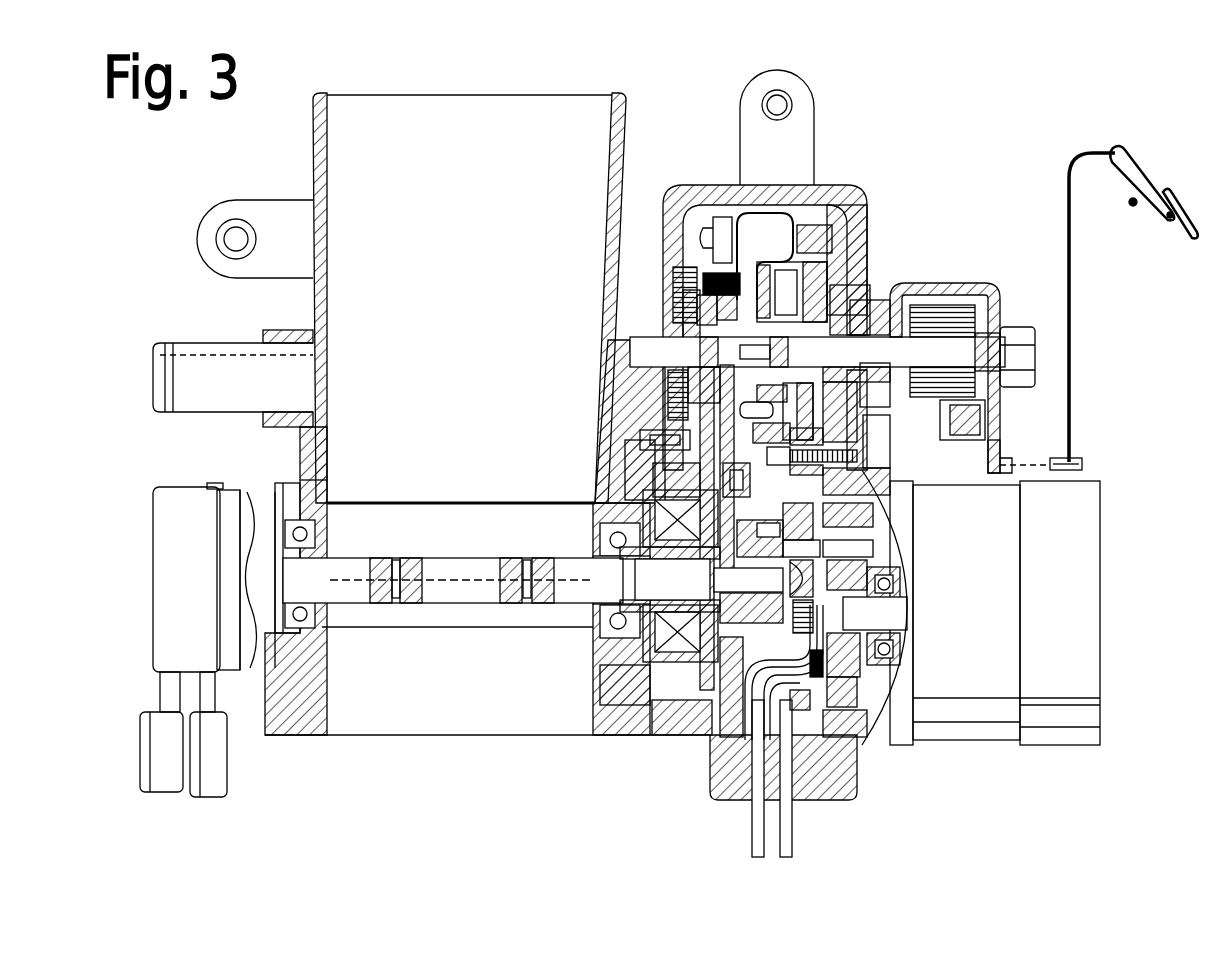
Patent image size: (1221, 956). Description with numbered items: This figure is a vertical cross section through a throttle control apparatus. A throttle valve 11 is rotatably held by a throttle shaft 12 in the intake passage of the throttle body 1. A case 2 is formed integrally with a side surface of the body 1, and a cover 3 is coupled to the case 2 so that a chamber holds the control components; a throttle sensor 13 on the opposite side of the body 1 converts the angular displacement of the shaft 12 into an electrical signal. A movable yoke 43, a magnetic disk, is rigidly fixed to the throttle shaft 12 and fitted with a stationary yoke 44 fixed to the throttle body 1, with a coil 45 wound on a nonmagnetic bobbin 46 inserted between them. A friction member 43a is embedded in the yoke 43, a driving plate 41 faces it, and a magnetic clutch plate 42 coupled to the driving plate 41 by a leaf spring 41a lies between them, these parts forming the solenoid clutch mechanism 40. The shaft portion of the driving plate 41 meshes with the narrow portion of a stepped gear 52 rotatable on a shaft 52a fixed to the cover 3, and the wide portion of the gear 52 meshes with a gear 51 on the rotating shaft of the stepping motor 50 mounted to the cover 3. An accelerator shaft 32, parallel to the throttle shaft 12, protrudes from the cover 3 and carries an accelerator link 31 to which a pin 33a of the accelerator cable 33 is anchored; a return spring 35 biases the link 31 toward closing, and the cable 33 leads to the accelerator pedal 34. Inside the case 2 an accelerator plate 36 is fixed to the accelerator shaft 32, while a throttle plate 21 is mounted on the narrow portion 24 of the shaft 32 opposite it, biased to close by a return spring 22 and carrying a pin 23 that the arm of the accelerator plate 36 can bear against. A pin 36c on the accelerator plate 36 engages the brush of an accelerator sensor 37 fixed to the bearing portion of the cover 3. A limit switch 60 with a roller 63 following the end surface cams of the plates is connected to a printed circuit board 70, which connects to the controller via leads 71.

The throttle body 1 is at (313, 170).
The case 2 is at (790, 275).
The cover 3 is at (850, 197).
The throttle valve 11 is at (467, 578).
The throttle shaft 12 is at (570, 598).
The throttle sensor 13 is at (193, 497).
The throttle plate 21 is at (718, 280).
The return spring 22 is at (668, 310).
The pin 23 is at (640, 440).
The narrow portion 24 is at (643, 337).
The accelerator link 31 is at (1000, 410).
The accelerator shaft 32 is at (953, 353).
The accelerator cable 33 is at (1072, 322).
The pin 33a is at (1073, 460).
The accelerator pedal 34 is at (1140, 213).
The return spring 35 is at (930, 303).
The accelerator plate 36 is at (800, 262).
The pin 36c is at (665, 400).
The accelerator sensor 37 is at (863, 278).
The solenoid clutch mechanism 40 is at (666, 708).
The driving plate 41 is at (790, 805).
The leaf spring 41a is at (742, 748).
The clutch plate 42 is at (703, 748).
The movable yoke 43 is at (690, 698).
The friction member 43a is at (640, 490).
The stationary yoke 44 is at (607, 700).
The coil 45 is at (668, 662).
The bobbin 46 is at (622, 723).
The motor 50 is at (988, 708).
The gear 51 is at (880, 725).
The gear 52 is at (873, 521).
The shaft 52a is at (870, 535).
The limit switch 60 is at (722, 203).
The roller 63 is at (718, 273).
The printed circuit board 70 is at (862, 762).
The leads 71 is at (792, 828).